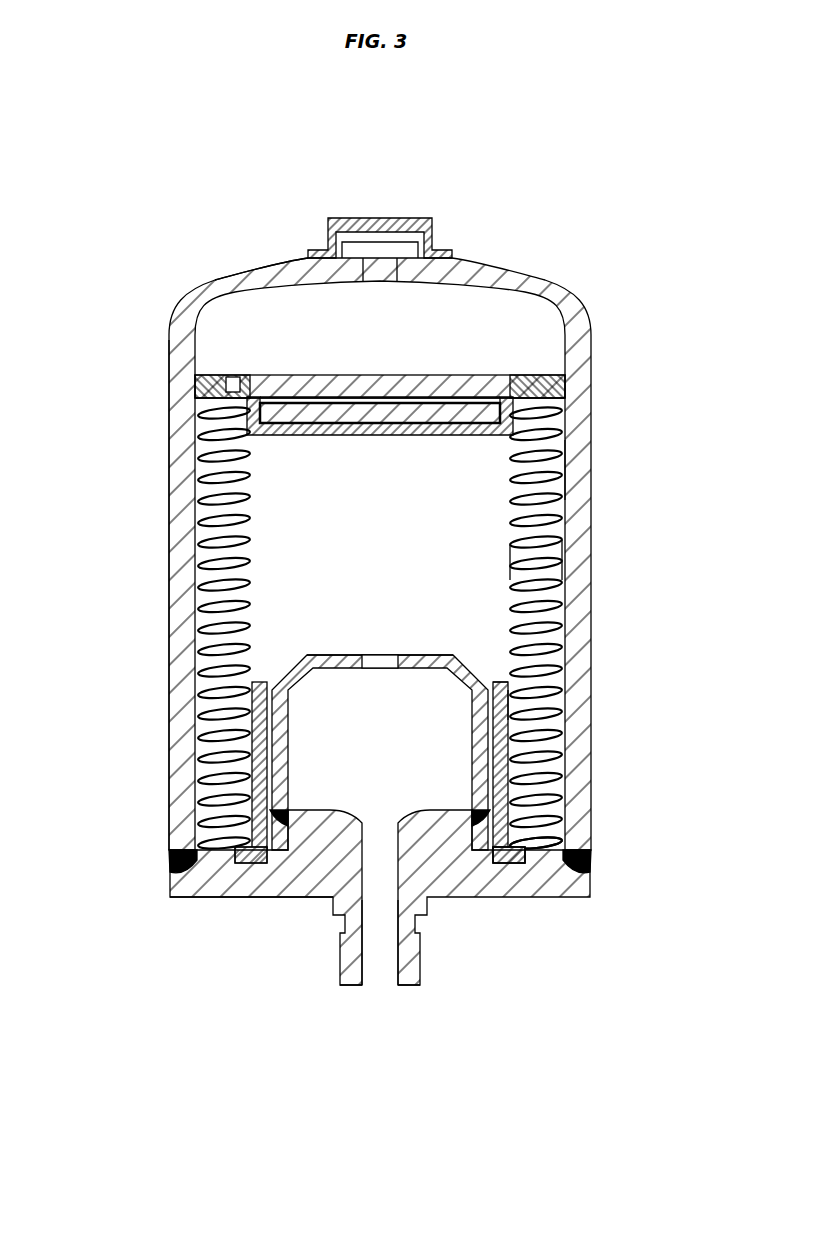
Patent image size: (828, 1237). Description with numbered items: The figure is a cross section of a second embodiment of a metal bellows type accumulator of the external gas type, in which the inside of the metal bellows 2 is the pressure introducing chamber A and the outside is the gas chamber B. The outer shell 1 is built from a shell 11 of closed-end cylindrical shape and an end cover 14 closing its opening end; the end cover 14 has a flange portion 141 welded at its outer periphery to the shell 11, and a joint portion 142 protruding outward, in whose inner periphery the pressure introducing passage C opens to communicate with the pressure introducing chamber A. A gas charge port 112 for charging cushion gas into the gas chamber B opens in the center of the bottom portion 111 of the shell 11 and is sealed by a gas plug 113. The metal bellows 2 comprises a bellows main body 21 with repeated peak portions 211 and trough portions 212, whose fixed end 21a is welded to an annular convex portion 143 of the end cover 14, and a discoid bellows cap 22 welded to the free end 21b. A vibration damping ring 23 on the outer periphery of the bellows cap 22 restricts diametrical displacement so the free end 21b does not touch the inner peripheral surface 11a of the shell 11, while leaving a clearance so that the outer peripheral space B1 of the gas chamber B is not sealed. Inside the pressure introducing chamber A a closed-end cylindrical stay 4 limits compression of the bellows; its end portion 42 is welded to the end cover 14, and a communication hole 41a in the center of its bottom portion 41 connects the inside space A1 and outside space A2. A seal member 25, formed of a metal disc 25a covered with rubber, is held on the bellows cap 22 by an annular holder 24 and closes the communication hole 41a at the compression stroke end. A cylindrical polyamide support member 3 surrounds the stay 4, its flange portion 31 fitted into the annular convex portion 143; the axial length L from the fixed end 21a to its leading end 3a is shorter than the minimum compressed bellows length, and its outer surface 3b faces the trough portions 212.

The outer shell 1 is at (190, 265).
The shell 11 is at (170, 502).
The inner peripheral surface 11a is at (566, 468).
The bottom portion 111 is at (290, 290).
The gas charge port 112 is at (383, 282).
The gas plug 113 is at (398, 232).
The end cover 14 is at (297, 905).
The flange portion 141 is at (257, 895).
The joint portion 142 is at (426, 965).
The annular convex portion 143 is at (592, 875).
The metal bellows 2 is at (583, 643).
The bellows main body 21 is at (545, 525).
The fixed end 21a is at (553, 836).
The free end 21b is at (236, 377).
The peak portions 211 is at (568, 559).
The trough portions 212 is at (512, 563).
The bellows cap 22 is at (333, 392).
The vibration damping ring 23 is at (568, 393).
The annular holder 24 is at (488, 436).
The seal member 25 is at (323, 436).
The disc 25a is at (436, 395).
The support member 3 is at (568, 763).
The leading end 3a is at (502, 684).
The outer peripheral surface of cylinder 3b is at (575, 702).
The flange portion 31 is at (515, 866).
The stay 4 is at (355, 650).
The bottom portion 41 is at (328, 652).
The communication hole 41a is at (398, 652).
The end portion 42 is at (482, 812).
The pressure introducing chamber A is at (120, 570).
The inside space A1 is at (320, 696).
The outside space A2 is at (280, 628).
The gas chamber B is at (492, 325).
The outer peripheral space B1 is at (553, 602).
The pressure introducing passage C is at (387, 957).
The length L is at (270, 845).